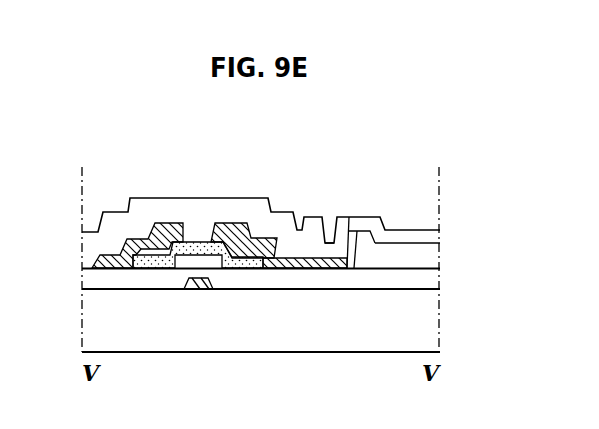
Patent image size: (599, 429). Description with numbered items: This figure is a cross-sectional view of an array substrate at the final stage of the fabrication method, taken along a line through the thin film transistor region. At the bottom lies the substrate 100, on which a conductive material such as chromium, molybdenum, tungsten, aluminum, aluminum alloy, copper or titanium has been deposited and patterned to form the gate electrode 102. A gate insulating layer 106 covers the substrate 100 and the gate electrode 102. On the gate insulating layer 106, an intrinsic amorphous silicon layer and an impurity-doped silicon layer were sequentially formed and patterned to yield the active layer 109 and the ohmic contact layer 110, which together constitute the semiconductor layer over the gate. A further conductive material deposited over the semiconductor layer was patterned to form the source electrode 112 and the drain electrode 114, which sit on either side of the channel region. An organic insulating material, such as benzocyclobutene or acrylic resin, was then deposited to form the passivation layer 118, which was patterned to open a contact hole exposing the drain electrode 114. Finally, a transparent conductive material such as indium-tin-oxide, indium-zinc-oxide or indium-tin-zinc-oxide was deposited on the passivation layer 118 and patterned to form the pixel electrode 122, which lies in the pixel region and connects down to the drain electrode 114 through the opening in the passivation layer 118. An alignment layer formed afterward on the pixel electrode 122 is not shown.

The substrate 100 is at (431, 342).
The gate electrode 102 is at (198, 290).
The gate insulating layer 106 is at (413, 268).
The active layer 109 is at (258, 246).
The ohmic contact layer 110 is at (234, 238).
The source electrode 112 is at (118, 245).
The drain electrode 114 is at (356, 235).
The passivation layer 118 is at (167, 198).
The pixel electrode 122 is at (319, 215).